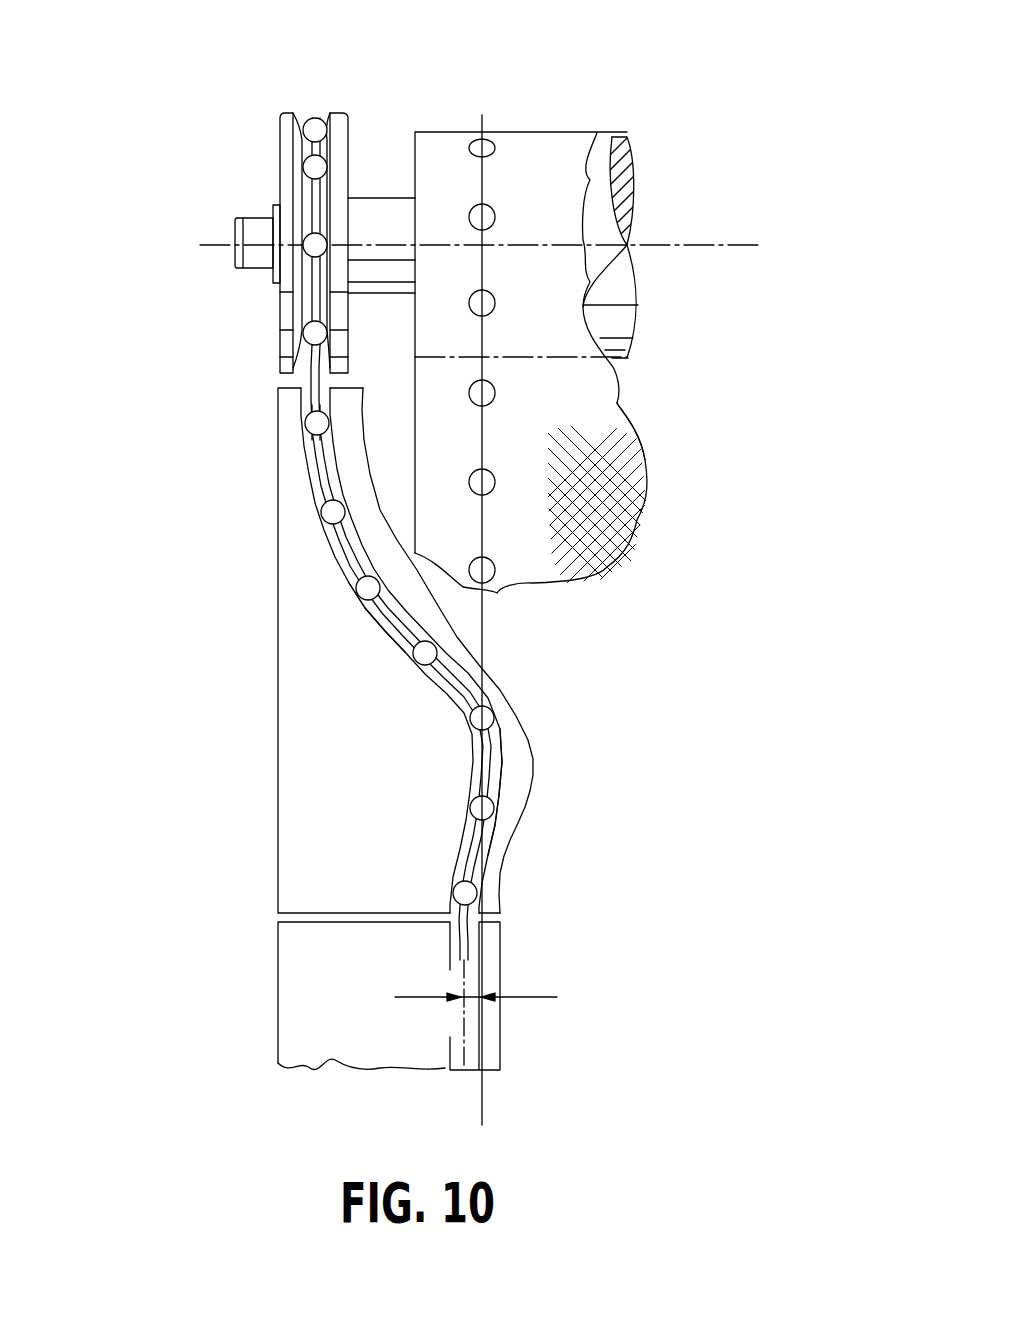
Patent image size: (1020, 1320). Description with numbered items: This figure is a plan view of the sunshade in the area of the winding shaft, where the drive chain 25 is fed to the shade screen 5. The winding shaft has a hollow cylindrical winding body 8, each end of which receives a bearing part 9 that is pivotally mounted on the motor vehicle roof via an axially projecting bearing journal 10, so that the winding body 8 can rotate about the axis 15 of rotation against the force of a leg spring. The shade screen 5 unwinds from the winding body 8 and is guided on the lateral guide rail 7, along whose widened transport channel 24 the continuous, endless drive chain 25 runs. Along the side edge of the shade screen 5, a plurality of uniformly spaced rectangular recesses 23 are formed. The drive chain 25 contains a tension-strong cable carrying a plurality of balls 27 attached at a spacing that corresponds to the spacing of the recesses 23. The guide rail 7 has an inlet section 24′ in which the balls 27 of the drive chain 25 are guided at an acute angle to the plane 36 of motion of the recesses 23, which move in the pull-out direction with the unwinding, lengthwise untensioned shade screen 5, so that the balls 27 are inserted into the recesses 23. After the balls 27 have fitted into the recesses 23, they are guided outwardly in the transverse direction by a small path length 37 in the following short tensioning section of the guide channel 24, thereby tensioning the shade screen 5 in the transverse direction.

The shade screen 5 is at (563, 427).
The guide rail 7 is at (278, 770).
The winding body 8 is at (600, 160).
The bearing part 9 is at (374, 215).
The bearing journal 10 is at (253, 233).
The axis of rotation 15 is at (722, 245).
The recesses 23 is at (482, 482).
The transport channel 24 is at (316, 490).
The inlet section 24′ is at (393, 645).
The drive chain 25 is at (313, 112).
The balls 27 is at (318, 422).
The plane of motion 36 is at (482, 627).
The path length 37 is at (473, 997).